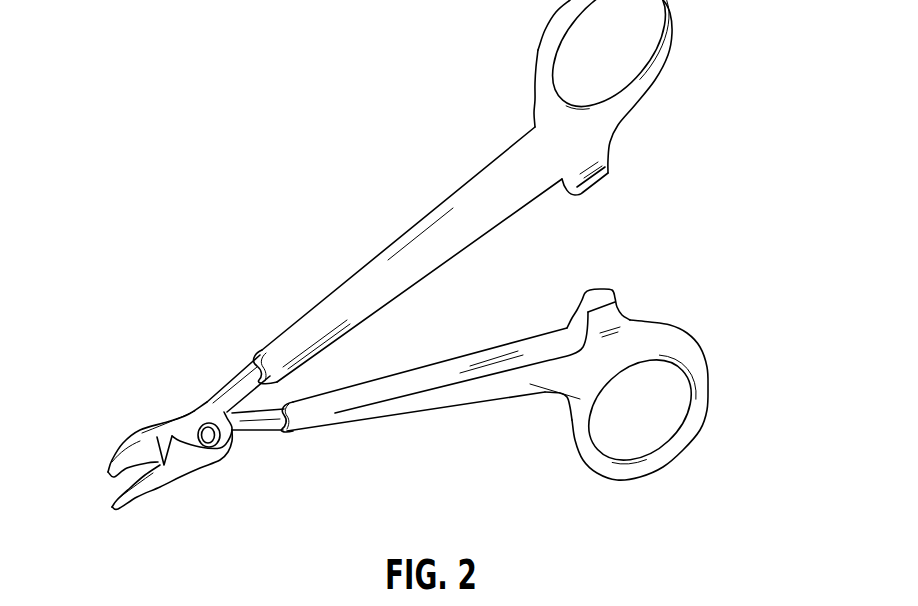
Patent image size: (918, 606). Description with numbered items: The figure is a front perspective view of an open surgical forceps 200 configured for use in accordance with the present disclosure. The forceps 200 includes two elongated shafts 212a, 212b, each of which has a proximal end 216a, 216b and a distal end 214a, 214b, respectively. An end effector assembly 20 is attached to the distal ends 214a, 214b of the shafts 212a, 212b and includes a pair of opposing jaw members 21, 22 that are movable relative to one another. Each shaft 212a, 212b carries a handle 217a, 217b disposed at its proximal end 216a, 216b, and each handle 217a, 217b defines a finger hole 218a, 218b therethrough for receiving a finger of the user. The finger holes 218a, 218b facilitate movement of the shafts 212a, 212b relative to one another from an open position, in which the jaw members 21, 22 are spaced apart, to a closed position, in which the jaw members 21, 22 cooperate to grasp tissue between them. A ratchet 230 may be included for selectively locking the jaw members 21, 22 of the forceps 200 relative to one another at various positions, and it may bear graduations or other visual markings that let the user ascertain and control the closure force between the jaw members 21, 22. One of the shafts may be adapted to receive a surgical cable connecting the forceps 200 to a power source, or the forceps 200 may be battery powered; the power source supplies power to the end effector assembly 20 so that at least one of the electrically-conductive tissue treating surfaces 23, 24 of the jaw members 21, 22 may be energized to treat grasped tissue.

The open forceps 200 is at (212, 136).
The end effector assembly 20 is at (241, 344).
The jaw member 21 is at (133, 442).
The jaw member 22 is at (133, 497).
The electrically-conductive tissue treating surface 23 is at (110, 468).
The electrically-conductive tissue treating surface 24 is at (113, 503).
The elongated shaft 212a is at (435, 401).
The elongated shaft 212b is at (407, 247).
The distal end 214a is at (292, 432).
The distal end 214b is at (278, 347).
The proximal end 216a is at (546, 392).
The proximal end 216b is at (527, 152).
The handle 217a is at (693, 365).
The handle 217b is at (660, 43).
The finger hole 218a is at (650, 403).
The finger hole 218b is at (620, 32).
The ratchet 230 is at (597, 183).